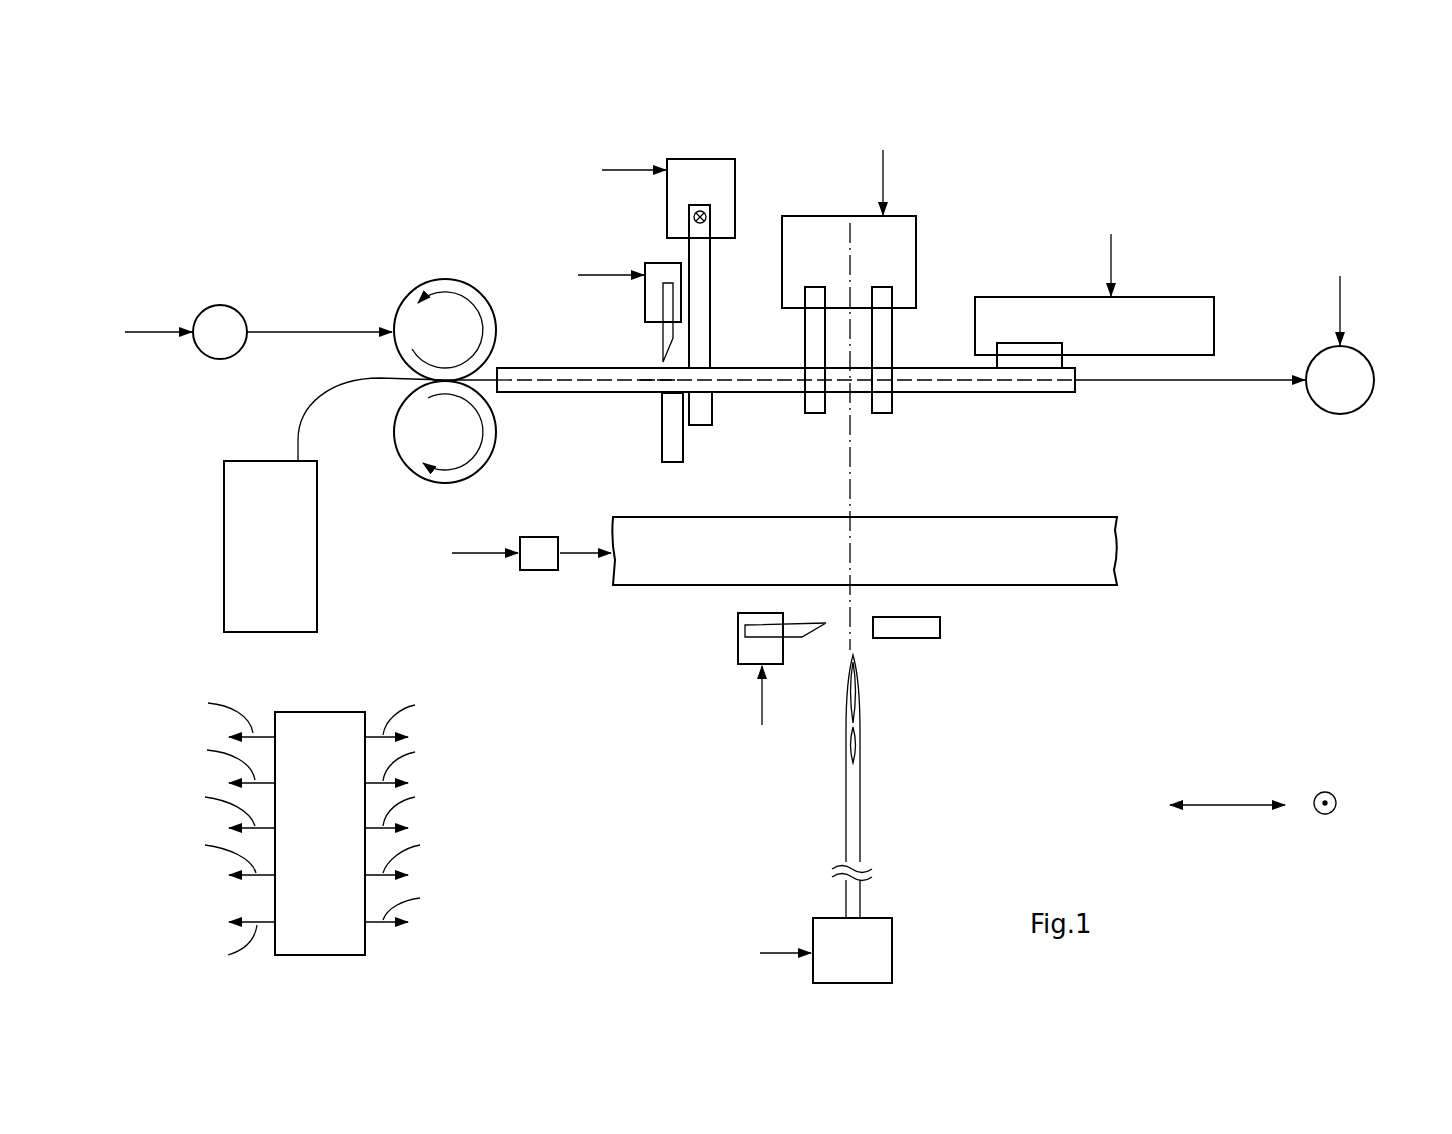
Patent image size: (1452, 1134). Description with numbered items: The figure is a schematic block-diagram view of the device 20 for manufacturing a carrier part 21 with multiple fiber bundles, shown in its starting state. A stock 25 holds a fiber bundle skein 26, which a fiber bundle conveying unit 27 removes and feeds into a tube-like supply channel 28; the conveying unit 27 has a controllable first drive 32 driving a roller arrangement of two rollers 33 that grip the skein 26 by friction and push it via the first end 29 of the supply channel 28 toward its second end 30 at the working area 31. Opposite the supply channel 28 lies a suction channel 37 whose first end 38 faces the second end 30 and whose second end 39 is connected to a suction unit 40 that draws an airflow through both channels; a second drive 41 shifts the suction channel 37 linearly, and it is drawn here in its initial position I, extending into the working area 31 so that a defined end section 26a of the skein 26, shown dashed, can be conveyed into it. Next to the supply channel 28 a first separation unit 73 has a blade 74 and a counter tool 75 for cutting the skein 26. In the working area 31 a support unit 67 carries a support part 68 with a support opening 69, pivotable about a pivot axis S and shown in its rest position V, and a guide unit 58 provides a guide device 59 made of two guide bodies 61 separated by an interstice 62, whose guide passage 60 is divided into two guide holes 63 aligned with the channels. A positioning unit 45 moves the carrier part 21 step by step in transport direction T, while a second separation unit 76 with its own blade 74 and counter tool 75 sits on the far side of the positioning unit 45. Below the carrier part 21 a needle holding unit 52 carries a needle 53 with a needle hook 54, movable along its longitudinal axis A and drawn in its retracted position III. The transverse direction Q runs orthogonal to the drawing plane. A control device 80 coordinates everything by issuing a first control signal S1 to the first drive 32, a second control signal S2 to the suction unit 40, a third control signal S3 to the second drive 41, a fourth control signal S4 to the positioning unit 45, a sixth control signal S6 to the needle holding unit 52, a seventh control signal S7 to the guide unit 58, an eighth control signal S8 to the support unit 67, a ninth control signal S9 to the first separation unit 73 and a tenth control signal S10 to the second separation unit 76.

The device 20 is at (1297, 173).
The carrier part 21 is at (1100, 550).
The stock 25 is at (242, 530).
The fiber bundle skein 26 is at (320, 397).
The end section 26a is at (937, 375).
The fiber bundle conveying unit 27 is at (422, 230).
The supply channel 28 is at (563, 368).
The first end 29 is at (497, 394).
The second end 30 is at (660, 383).
The working area 31 is at (795, 490).
The first drive 32 is at (220, 323).
The rollers 33 is at (408, 305).
The suction channel 37 is at (948, 393).
The first end 38 is at (662, 386).
The second end 39 is at (1078, 388).
The suction unit 40 is at (1346, 404).
The second drive 41 is at (1194, 308).
The positioning unit 45 is at (537, 557).
The needle holding unit 52 is at (873, 950).
The needle 53 is at (857, 813).
The needle hook 54 is at (862, 720).
The guide unit 58 is at (932, 203).
The guide device 59 is at (893, 303).
The guide passage 60 is at (880, 365).
The guide bodies 61 is at (808, 403).
The interstice 62 is at (862, 337).
The guide holes 63 is at (818, 395).
The support unit 67 is at (718, 147).
The support part 68 is at (693, 250).
The support opening 69 is at (702, 362).
The first separation unit 73 is at (623, 252).
The blade 74 is at (665, 345).
The counter tool 75 is at (673, 433).
The second separation unit 76 is at (723, 672).
The control device 80 is at (353, 933).
The pivot axis S is at (700, 211).
The longitudinal axis A is at (850, 275).
The initial position I is at (998, 400).
The retracted position III is at (818, 835).
The rest position V is at (742, 217).
The transport direction T is at (1222, 805).
The transverse direction Q is at (1330, 814).
The first control signal S1 is at (153, 330).
The second control signal S2 is at (1340, 290).
The third control signal S3 is at (1111, 255).
The fourth control signal S4 is at (483, 557).
The sixth control signal S6 is at (766, 950).
The seventh control signal S7 is at (883, 178).
The eighth control signal S8 is at (633, 170).
The ninth control signal S9 is at (596, 275).
The tenth control signal S10 is at (762, 700).